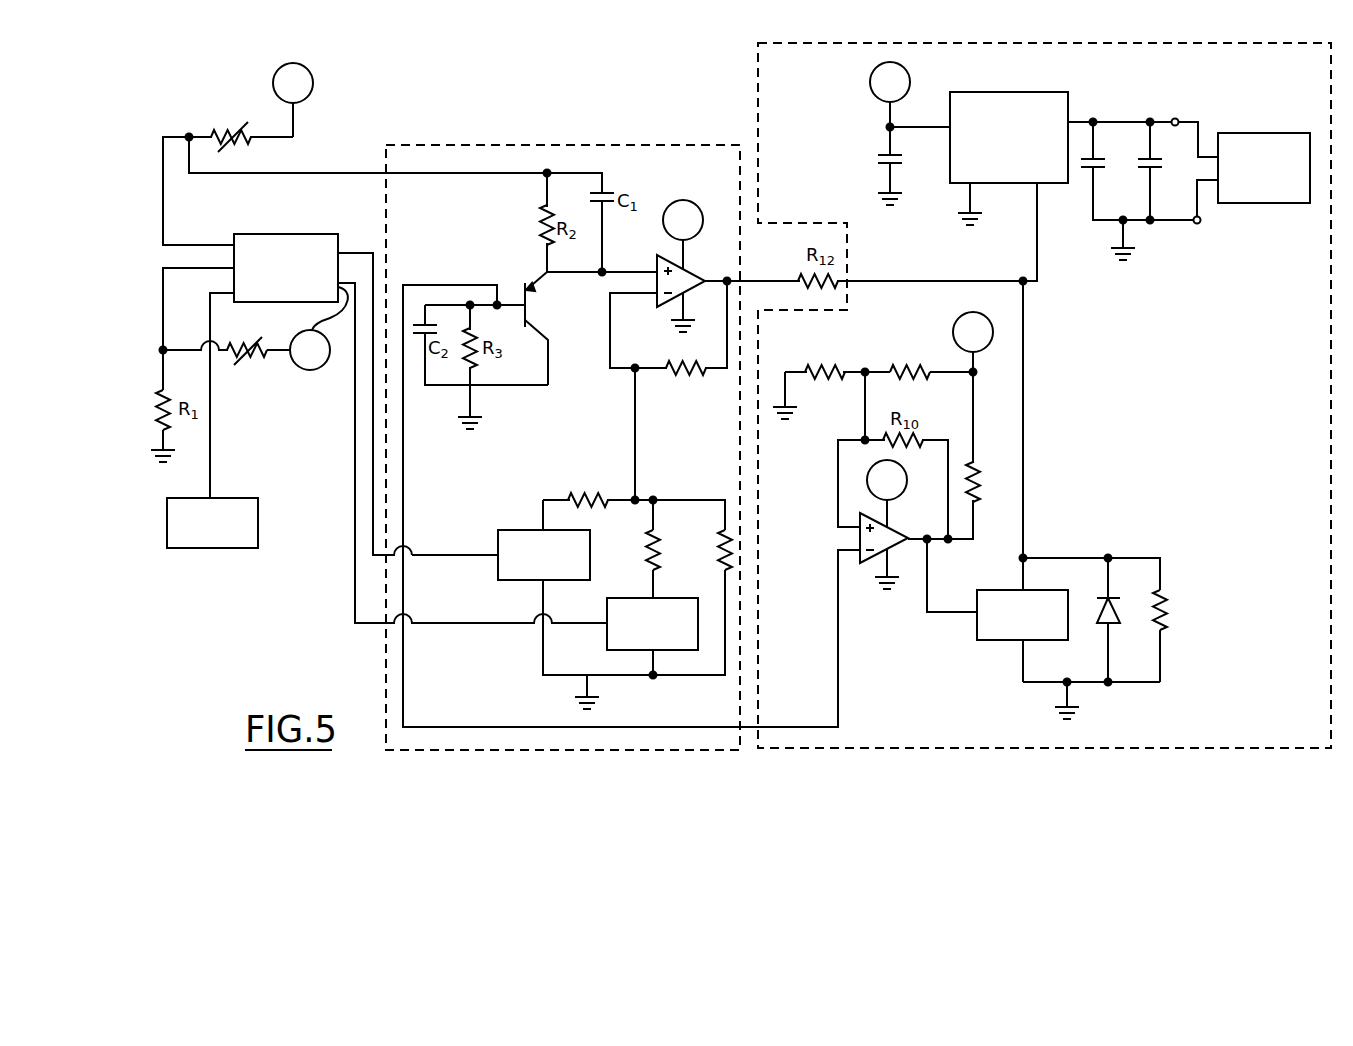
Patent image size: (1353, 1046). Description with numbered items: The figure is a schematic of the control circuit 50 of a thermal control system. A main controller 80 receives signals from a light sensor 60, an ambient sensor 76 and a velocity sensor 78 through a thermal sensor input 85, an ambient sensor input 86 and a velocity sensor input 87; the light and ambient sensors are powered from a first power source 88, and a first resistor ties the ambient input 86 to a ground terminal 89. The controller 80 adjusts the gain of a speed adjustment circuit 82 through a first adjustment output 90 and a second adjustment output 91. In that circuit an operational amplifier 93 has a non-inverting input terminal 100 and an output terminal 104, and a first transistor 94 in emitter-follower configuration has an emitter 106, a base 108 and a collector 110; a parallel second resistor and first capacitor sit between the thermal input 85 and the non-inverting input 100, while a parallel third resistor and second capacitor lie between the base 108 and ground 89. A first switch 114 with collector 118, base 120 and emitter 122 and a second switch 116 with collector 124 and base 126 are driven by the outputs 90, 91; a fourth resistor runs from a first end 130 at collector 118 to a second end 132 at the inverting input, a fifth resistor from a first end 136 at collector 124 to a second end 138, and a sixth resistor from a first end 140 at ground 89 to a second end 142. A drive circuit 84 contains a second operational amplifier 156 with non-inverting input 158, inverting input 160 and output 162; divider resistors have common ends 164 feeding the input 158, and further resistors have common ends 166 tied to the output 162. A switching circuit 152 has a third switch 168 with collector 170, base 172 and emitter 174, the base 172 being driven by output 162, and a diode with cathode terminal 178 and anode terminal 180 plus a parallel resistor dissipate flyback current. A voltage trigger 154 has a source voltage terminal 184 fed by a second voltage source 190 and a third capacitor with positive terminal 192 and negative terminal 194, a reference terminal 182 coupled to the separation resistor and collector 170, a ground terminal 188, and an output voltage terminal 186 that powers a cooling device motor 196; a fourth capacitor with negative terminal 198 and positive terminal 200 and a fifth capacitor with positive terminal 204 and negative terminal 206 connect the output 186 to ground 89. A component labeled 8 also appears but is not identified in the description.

The voltage source V1 8 is at (907, 479).
The control circuit 50 is at (681, 86).
The light sensor 60 is at (237, 130).
The ambient sensor 76 is at (248, 367).
The velocity sensor 78 is at (240, 497).
The main controller 80 is at (296, 233).
The speed adjustment circuit 82 is at (669, 145).
The drive circuit 84 is at (757, 82).
The thermal sensor input 85 is at (232, 243).
The ambient sensor input 86 is at (232, 270).
The velocity sensor input 87 is at (234, 296).
The first power source 88 is at (313, 85).
The ground terminal 89 is at (172, 450).
The first adjustment output 90 is at (341, 251).
The second adjustment output 91 is at (331, 313).
The operational amplifier 93 is at (706, 291).
The first transistor 94 is at (548, 305).
The non-inverting input terminal 100 is at (654, 266).
The output terminal 104 is at (706, 278).
The emitter 106 is at (542, 271).
The base 108 is at (518, 318).
The collector 110 is at (540, 332).
The first switch 114 is at (497, 575).
The second switch 116 is at (607, 640).
The collector 118 is at (542, 528).
The base 120 is at (497, 553).
The emitter 122 is at (538, 584).
The collector 124 is at (663, 595).
The base 126 is at (605, 620).
The first end 130 is at (556, 498).
The second end 132 is at (618, 498).
The first end 136 is at (650, 571).
The second end 138 is at (650, 517).
The first end 140 is at (725, 592).
The second end 142 is at (722, 521).
The switching circuit 152 is at (1147, 505).
The voltage trigger 154 is at (1019, 92).
The second operational amplifier 156 is at (901, 522).
The non-inverting input 158 is at (858, 526).
The inverting input 160 is at (858, 548).
The output 162 is at (912, 539).
The resistor common ends 164 is at (866, 368).
The resistor common ends 166 is at (972, 436).
The third switch 168 is at (1058, 641).
The collector 170 is at (1028, 590).
The base 172 is at (972, 618).
The emitter 174 is at (1020, 644).
The cathode terminal 178 is at (1108, 598).
The anode terminal 180 is at (1118, 628).
The reference terminal 182 is at (1027, 200).
The source voltage terminal 184 is at (946, 124).
The output voltage terminal 186 is at (1076, 120).
The ground terminal 188 is at (968, 192).
The second voltage source 190 is at (684, 200).
The positive terminal 192 is at (884, 151).
The negative terminal 194 is at (880, 162).
The cooling device motor 196 is at (1272, 133).
The negative terminal 198 is at (1100, 160).
The positive terminal 200 is at (1087, 172).
The positive terminal 204 is at (1156, 161).
The negative terminal 206 is at (1150, 175).